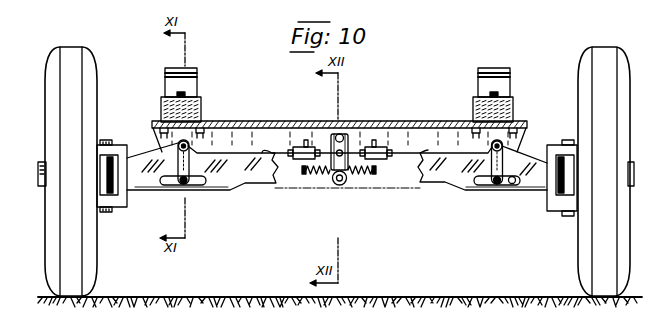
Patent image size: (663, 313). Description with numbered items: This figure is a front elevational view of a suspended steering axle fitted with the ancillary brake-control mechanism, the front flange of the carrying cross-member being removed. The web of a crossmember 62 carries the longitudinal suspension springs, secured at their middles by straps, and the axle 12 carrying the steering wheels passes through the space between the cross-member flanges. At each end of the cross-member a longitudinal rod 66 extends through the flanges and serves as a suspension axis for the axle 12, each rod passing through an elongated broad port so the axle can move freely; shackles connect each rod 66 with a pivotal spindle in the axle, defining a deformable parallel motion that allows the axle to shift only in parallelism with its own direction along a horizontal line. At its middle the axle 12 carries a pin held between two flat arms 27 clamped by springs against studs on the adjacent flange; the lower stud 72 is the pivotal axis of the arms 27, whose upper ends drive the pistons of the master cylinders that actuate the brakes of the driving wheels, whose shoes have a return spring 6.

The return spring 6 is at (503, 145).
The axle 12 is at (429, 178).
The flat arms 27 is at (345, 137).
The web of a crossmember 62 is at (250, 121).
The longitudinal rod 66 is at (497, 184).
The lower stud 72 is at (339, 185).